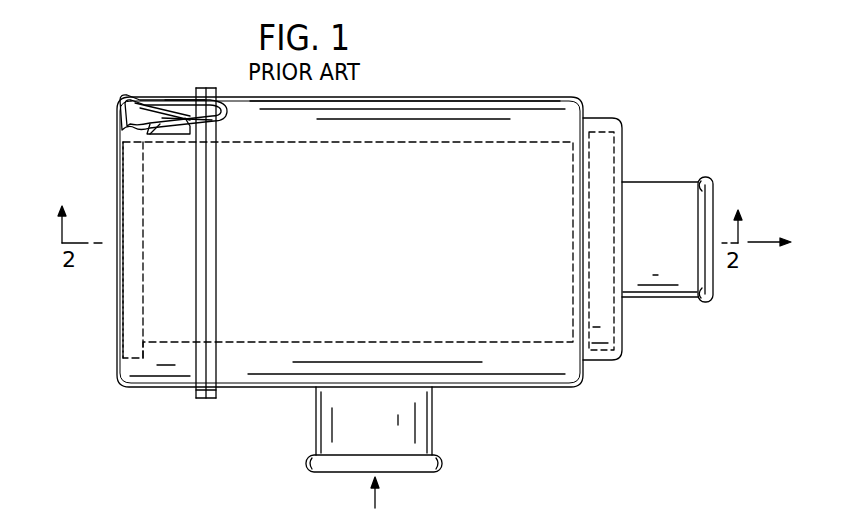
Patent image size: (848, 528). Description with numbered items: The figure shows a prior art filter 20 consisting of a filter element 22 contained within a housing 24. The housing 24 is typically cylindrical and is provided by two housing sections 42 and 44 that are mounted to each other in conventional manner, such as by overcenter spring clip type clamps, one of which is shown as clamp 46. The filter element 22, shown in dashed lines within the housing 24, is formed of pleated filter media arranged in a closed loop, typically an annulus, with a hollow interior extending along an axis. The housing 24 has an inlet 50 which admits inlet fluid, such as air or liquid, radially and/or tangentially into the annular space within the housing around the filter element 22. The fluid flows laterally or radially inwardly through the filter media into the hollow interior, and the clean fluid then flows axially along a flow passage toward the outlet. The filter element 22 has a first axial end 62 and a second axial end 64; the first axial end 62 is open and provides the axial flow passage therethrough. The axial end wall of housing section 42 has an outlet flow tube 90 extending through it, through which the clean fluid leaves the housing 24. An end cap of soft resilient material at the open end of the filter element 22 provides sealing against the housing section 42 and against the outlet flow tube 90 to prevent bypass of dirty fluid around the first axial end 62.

The filter 20 is at (571, 82).
The filter element 22 is at (373, 142).
The housing 24 is at (478, 96).
The housing section 42 is at (280, 388).
The housing section 44 is at (160, 389).
The overcenter spring clip type clamp 46 is at (179, 98).
The inlet 50 is at (432, 420).
The first axial end 62 is at (571, 183).
The second axial end 64 is at (142, 162).
The outlet flow tube 90 is at (652, 297).